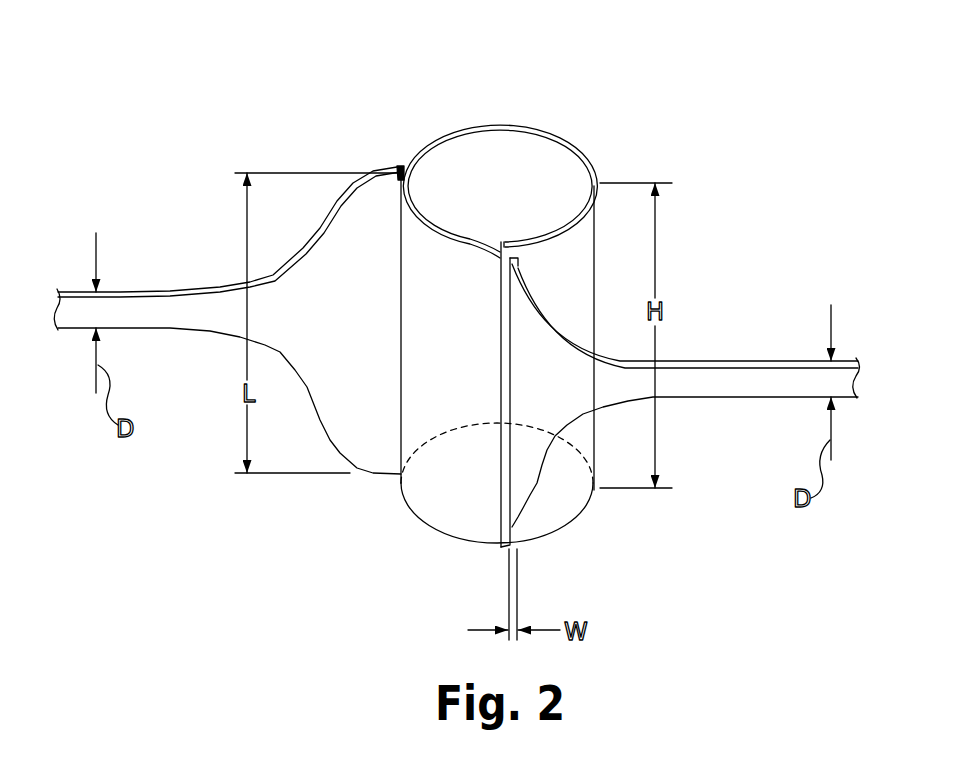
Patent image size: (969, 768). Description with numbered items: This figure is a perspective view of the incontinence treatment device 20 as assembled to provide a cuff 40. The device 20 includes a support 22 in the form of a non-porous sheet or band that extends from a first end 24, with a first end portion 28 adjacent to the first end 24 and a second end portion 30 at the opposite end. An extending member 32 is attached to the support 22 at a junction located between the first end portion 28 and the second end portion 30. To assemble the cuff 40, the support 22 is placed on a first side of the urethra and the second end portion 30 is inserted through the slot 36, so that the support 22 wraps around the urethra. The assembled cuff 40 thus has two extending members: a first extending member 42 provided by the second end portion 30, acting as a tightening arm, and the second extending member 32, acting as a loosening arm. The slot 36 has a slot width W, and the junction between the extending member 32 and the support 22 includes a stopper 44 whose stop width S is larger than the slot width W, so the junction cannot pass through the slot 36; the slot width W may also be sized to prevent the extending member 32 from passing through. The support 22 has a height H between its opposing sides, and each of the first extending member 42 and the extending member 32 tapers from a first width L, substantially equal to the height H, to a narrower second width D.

The incontinence treatment device 20 is at (616, 72).
The support 22 is at (582, 150).
The first end 24 is at (488, 549).
The first end portion 28 is at (572, 525).
The second end portion 30 is at (766, 387).
The extending member 32 is at (169, 314).
The slot 36 is at (516, 527).
The cuff 40 is at (456, 100).
The first extending member 42 is at (730, 345).
The stopper 44 is at (399, 166).